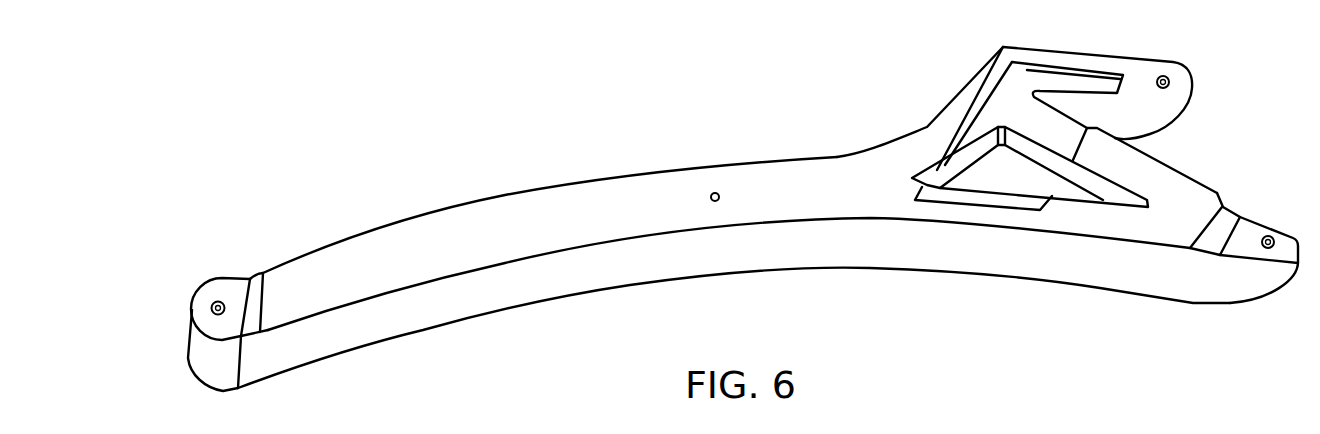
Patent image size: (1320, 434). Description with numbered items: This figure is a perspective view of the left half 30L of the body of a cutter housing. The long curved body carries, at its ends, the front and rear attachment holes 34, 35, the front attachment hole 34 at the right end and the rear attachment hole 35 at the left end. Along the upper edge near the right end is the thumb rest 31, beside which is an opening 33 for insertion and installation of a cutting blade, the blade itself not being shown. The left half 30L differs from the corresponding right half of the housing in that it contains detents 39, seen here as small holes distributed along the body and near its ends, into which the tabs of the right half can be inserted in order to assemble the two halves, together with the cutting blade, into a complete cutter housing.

The left half 30L is at (584, 114).
The thumb rest 31 is at (926, 126).
The opening 33 is at (1000, 107).
The front attachment hole 34 is at (1210, 246).
The rear attachment hole 35 is at (250, 288).
The detents 39 is at (214, 301).